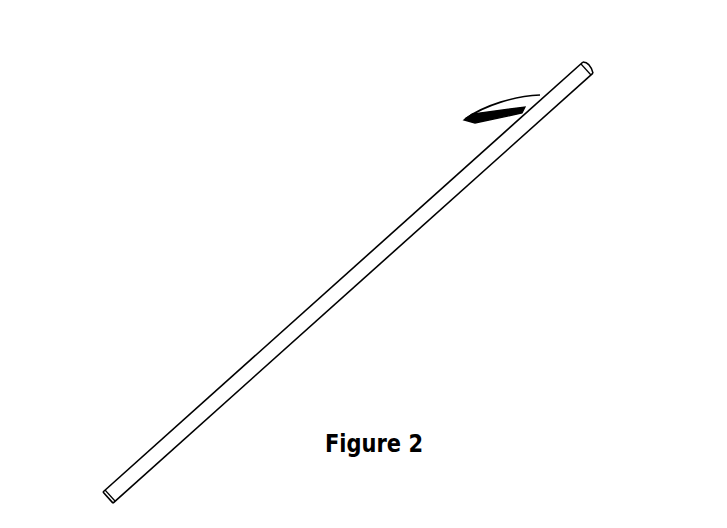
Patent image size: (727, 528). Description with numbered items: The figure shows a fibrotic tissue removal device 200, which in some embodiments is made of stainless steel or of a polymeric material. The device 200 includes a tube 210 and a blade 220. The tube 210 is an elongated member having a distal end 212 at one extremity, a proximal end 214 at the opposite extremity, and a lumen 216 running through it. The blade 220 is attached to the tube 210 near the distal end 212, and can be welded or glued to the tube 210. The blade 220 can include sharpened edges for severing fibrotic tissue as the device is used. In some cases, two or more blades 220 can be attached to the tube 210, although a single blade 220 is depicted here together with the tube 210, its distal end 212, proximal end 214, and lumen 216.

The fibrotic tissue removal device 200 is at (163, 133).
The tube 210 is at (318, 299).
The distal end 212 is at (584, 62).
The proximal end 214 is at (103, 492).
The lumen 216 is at (590, 64).
The blade 220 is at (466, 119).